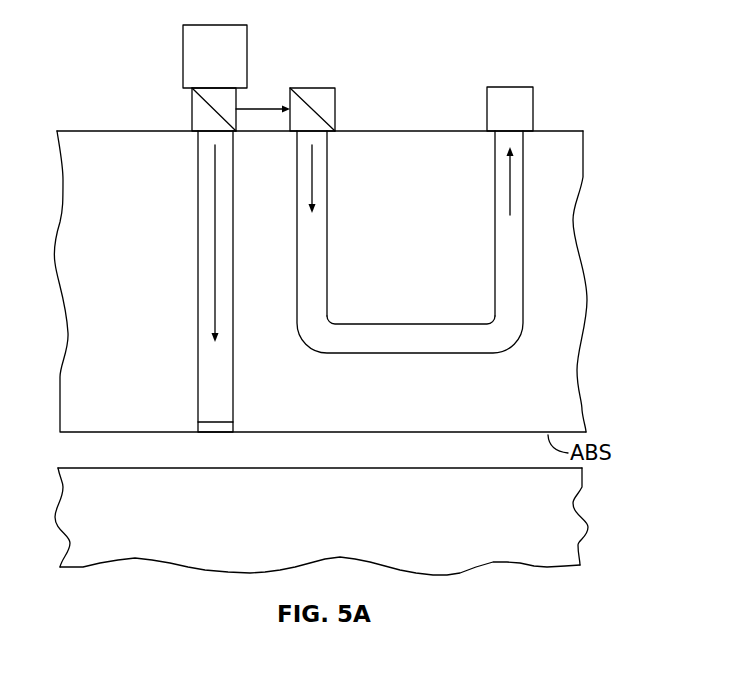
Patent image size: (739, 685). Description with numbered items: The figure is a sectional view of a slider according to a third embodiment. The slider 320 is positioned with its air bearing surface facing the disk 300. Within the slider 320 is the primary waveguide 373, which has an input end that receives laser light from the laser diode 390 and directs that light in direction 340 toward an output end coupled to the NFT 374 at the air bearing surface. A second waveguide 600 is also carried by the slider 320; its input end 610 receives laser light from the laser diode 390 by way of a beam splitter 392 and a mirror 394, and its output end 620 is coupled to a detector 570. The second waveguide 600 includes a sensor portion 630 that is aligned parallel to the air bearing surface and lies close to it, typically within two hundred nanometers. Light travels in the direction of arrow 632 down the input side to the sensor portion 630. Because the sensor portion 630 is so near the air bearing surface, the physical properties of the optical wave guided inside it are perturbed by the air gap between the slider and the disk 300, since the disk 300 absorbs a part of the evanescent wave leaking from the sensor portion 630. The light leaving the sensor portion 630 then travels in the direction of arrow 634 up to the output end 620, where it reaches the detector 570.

The disk 300 is at (575, 525).
The slider 320 is at (568, 371).
The direction of laser light in primary waveguide 340 is at (212, 183).
The primary waveguide 373 is at (198, 287).
The NFT 374 is at (213, 428).
The laser diode 390 is at (248, 40).
The beam splitter 392 is at (192, 110).
The mirror 394 is at (335, 100).
The detector 570 is at (533, 100).
The second waveguide 600 is at (525, 302).
The input end of second waveguide 610 is at (317, 135).
The output end of second waveguide 620 is at (517, 135).
The sensor portion 630 is at (408, 322).
The arrow indicating light direction toward sensor portion 632 is at (318, 187).
The arrow indicating light direction from sensor portion 634 is at (495, 188).